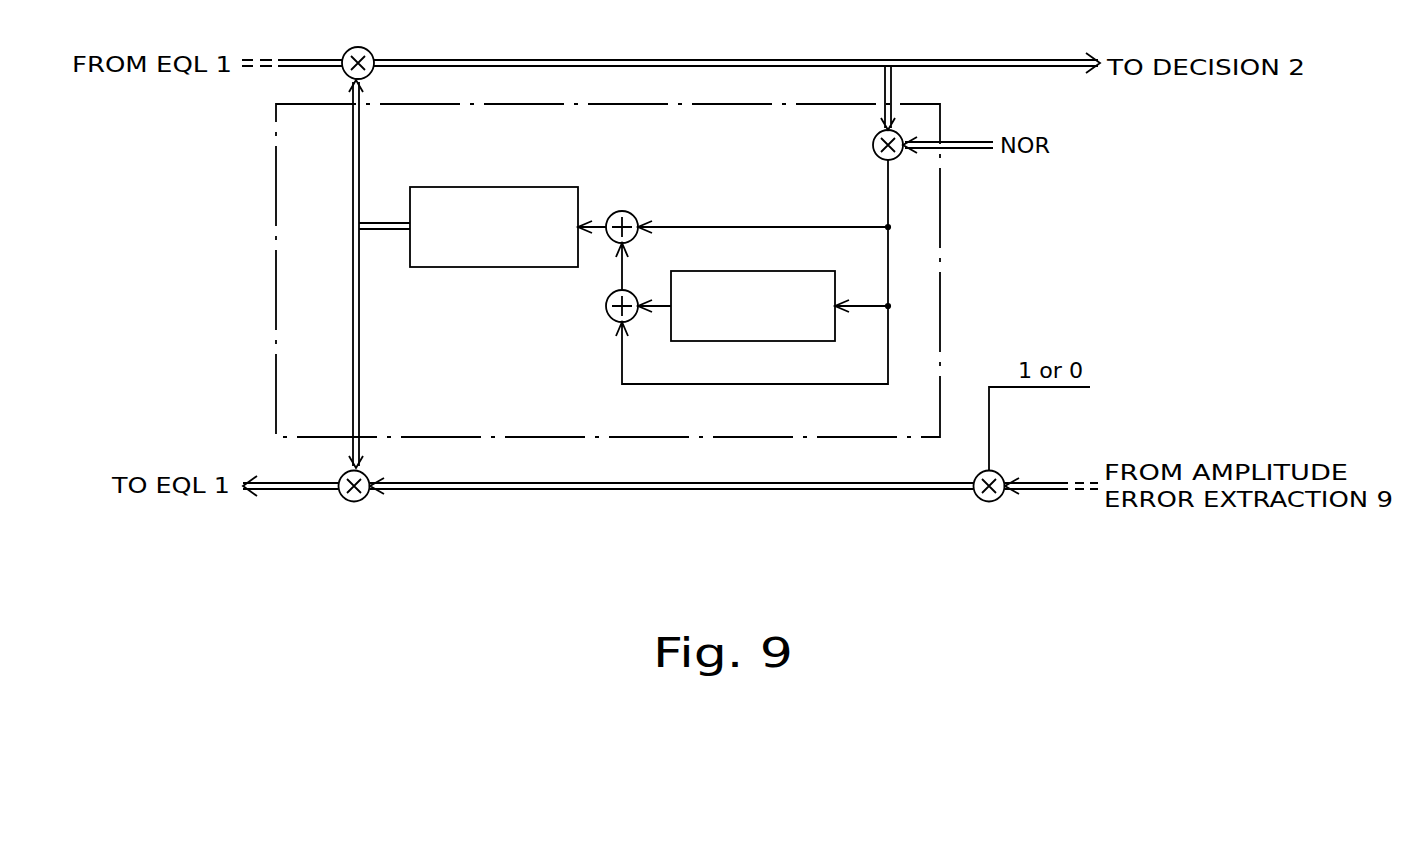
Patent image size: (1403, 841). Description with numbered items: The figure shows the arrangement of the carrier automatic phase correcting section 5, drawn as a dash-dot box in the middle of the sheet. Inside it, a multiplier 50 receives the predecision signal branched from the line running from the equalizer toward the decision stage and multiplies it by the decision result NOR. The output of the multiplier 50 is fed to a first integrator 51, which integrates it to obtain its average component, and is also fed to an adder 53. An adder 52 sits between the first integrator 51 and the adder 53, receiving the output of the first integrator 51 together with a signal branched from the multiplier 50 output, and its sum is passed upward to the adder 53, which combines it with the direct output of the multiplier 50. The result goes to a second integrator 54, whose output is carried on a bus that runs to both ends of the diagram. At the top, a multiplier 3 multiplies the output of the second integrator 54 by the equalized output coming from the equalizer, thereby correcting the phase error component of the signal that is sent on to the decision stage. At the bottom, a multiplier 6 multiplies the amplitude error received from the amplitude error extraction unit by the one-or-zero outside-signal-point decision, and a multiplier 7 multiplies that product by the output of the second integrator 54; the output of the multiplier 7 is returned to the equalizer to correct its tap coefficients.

The multiplier 3 is at (367, 48).
The carrier automatic phase correcting section 5 is at (940, 245).
The multiplier 6 is at (980, 500).
The multiplier 7 is at (350, 502).
The multiplier 50 is at (873, 142).
The first integrator 51 is at (743, 271).
The adder 52 is at (608, 318).
The adder 53 is at (612, 213).
The second integrator 54 is at (508, 187).